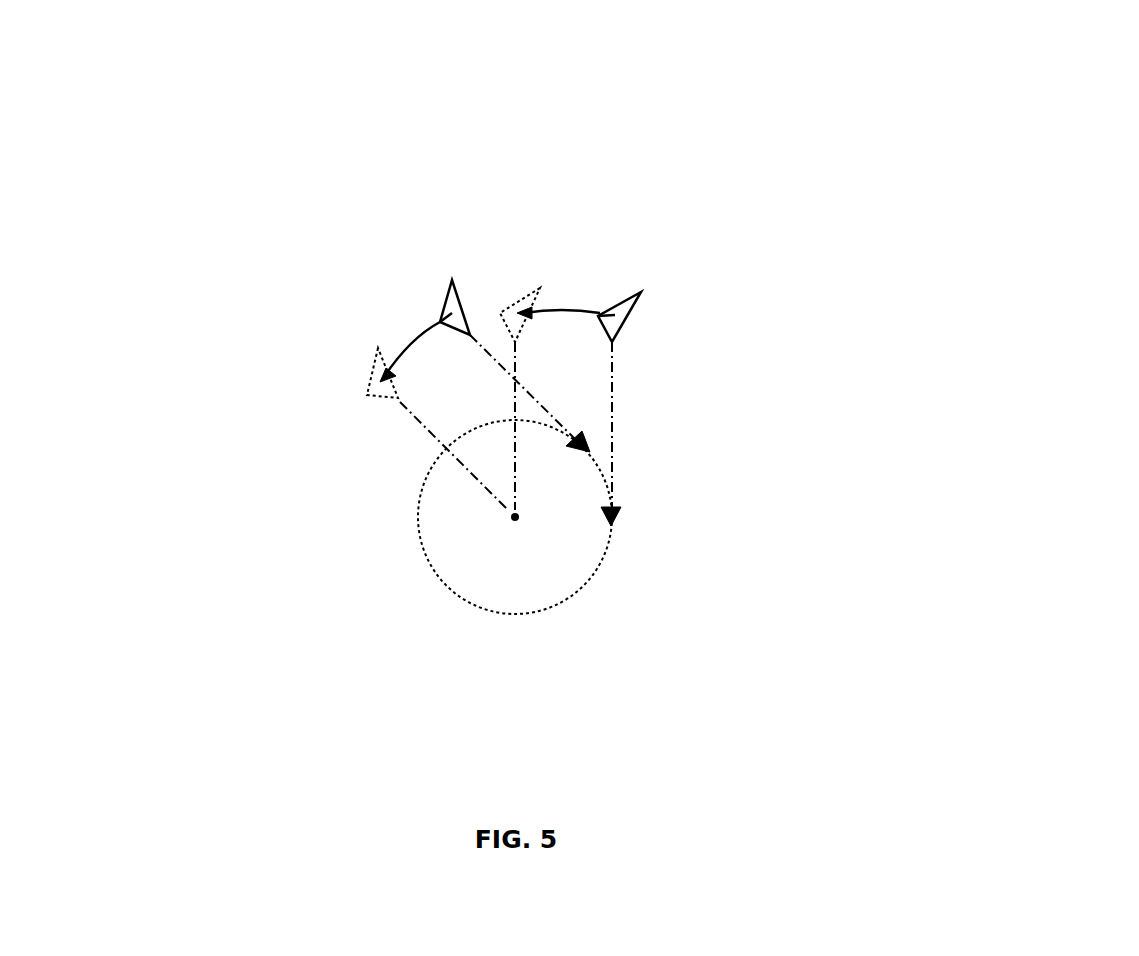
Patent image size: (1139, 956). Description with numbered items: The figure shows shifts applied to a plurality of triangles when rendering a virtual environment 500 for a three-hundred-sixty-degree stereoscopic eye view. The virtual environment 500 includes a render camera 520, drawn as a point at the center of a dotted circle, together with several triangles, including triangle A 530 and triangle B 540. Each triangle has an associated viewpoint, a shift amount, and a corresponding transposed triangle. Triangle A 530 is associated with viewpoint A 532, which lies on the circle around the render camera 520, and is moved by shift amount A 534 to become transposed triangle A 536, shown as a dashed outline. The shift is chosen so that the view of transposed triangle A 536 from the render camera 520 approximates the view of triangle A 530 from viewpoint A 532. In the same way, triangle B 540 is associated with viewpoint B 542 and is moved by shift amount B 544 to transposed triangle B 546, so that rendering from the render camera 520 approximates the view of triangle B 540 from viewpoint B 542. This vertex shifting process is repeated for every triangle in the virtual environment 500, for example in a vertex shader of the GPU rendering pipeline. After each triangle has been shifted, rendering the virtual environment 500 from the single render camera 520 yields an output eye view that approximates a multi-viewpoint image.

The virtual environment 500 is at (657, 322).
The render camera 520 is at (505, 517).
The triangle A 530 is at (442, 285).
The viewpoint A 532 is at (595, 448).
The shift amount A 534 is at (412, 333).
The transposed triangle A 536 is at (362, 373).
The triangle B 540 is at (633, 332).
The viewpoint B 542 is at (618, 517).
The shift amount B 544 is at (572, 302).
The transposed triangle B 546 is at (515, 297).